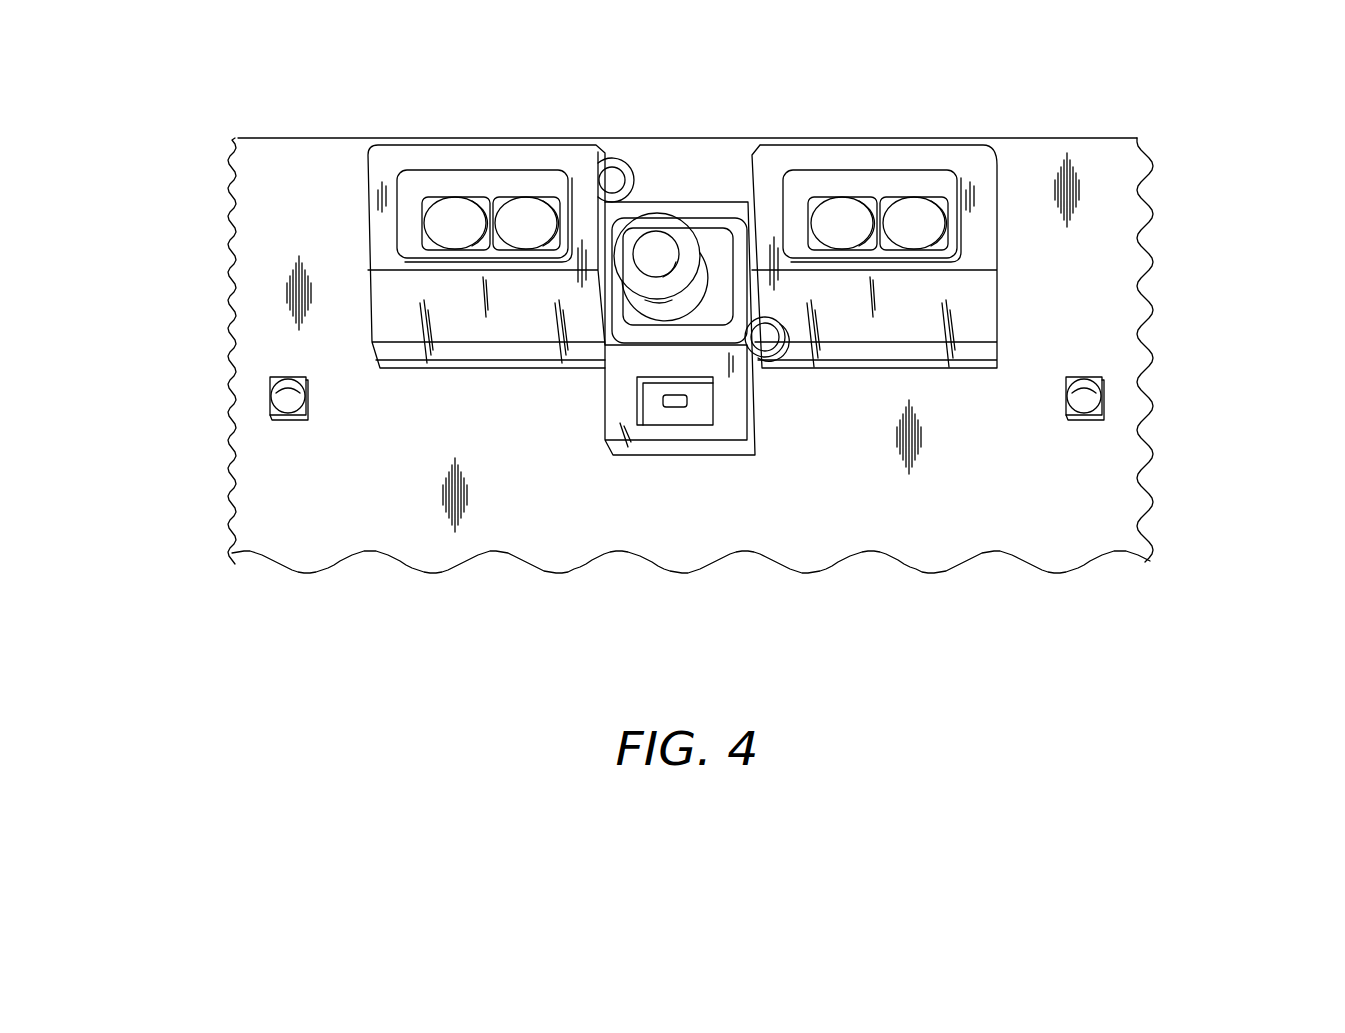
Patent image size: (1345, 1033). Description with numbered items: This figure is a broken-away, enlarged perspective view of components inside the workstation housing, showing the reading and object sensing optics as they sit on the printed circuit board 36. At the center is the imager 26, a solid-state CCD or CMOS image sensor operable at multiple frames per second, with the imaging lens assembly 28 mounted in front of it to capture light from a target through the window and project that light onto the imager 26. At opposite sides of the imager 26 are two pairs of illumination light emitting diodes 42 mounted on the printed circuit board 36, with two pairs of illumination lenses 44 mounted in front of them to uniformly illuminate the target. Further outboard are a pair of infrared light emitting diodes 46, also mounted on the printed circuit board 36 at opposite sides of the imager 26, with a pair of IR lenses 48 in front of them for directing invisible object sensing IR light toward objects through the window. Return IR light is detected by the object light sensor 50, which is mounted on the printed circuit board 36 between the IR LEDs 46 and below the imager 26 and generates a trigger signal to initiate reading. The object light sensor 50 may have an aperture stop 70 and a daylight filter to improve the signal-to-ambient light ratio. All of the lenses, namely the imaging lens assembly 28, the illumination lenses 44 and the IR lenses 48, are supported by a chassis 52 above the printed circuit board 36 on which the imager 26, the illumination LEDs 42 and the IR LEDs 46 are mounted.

The printed circuit board 36 is at (248, 344).
The illumination light emitting diodes 42 is at (669, 143).
The illumination lenses 44 is at (450, 212).
The imager 26 is at (647, 184).
The imaging lens assembly 28 is at (652, 230).
The infrared light emitting diodes 46 is at (692, 414).
The IR lenses 48 is at (270, 395).
The object light sensor 50 is at (673, 407).
The aperture stop 70 is at (713, 400).
The chassis 52 is at (688, 344).